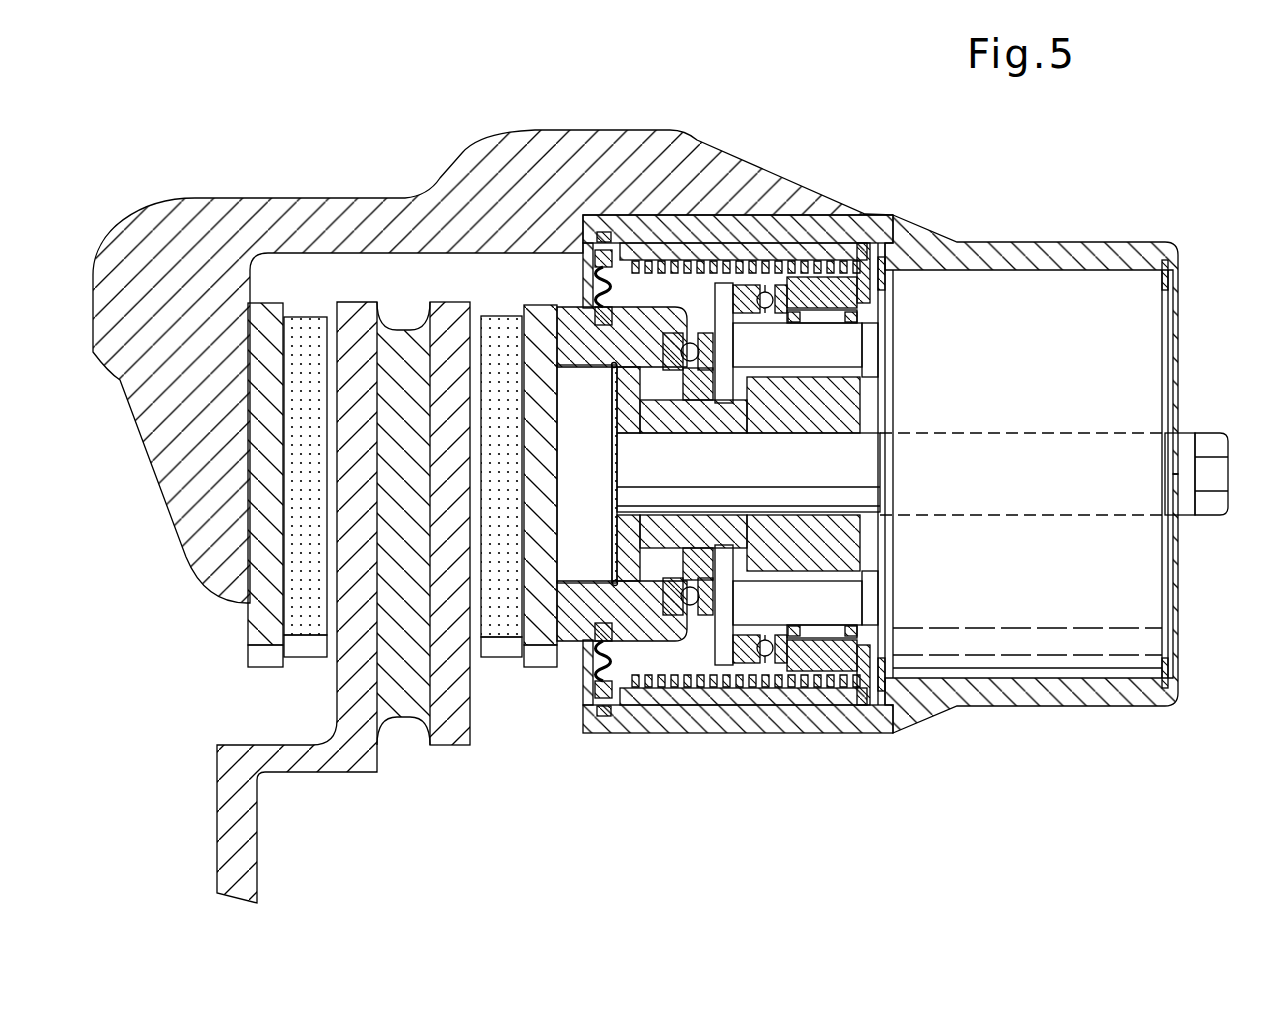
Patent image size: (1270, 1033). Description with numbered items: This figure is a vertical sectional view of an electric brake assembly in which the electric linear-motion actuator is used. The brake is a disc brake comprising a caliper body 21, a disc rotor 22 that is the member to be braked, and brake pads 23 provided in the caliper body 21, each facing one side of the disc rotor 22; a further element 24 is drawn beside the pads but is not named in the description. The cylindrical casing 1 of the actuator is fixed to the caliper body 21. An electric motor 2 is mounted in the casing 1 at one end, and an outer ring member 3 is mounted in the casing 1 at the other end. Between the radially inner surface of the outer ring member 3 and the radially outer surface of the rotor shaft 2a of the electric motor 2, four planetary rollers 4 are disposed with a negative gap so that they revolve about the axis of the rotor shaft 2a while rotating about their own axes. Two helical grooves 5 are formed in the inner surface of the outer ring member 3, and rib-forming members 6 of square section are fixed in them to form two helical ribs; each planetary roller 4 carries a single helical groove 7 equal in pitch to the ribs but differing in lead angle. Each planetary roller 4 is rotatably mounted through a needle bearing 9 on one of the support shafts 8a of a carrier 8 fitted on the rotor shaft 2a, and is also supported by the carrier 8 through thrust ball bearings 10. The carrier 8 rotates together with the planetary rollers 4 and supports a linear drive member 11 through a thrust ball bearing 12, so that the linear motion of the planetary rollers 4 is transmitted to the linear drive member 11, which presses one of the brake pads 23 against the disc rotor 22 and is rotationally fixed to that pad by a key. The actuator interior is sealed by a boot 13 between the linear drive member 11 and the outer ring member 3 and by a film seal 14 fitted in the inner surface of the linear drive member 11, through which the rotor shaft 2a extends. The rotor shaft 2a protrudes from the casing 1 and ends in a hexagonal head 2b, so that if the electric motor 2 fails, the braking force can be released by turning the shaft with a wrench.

The cylindrical casing 1 is at (1040, 248).
The electric motor 2 is at (1093, 318).
The rotor shaft 2a is at (875, 452).
The hexagonal head 2b is at (1212, 445).
The outer ring member 3 is at (722, 330).
The planetary rollers 4 is at (868, 300).
The helical grooves 5 is at (858, 270).
The rib-forming members 6 is at (832, 295).
The helical groove 7 is at (830, 503).
The carrier 8 is at (745, 268).
The support shafts 8a is at (808, 320).
The needle bearing 9 is at (883, 355).
The thrust ball bearings 10 is at (768, 292).
The linear drive member 11 is at (635, 343).
The thrust ball bearing 12 is at (692, 333).
The boot 13 is at (593, 660).
The film seal 14 is at (607, 527).
The caliper body 21 is at (213, 232).
The disc rotor 22 is at (410, 365).
The brake pads 23 is at (303, 593).
The pad hub 24 is at (565, 330).